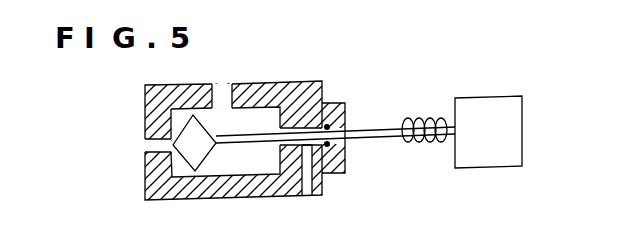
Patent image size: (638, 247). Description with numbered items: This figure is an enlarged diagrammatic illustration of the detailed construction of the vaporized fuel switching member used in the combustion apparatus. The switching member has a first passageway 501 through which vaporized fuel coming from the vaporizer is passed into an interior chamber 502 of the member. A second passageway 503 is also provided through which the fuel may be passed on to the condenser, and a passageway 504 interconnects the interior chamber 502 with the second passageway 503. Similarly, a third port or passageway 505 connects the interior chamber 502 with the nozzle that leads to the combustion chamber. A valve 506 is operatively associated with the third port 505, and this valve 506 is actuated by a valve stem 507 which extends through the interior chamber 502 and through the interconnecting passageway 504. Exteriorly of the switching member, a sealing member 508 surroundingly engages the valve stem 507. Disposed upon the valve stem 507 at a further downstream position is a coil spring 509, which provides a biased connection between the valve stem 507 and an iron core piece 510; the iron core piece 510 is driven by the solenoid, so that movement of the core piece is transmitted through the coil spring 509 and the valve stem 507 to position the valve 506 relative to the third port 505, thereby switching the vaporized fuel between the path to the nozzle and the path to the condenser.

The first passageway 501 is at (222, 96).
The interior chamber 502 is at (218, 162).
The second passageway 503 is at (307, 188).
The passageway 504 is at (287, 146).
The third port 505 is at (158, 148).
The valve 506 is at (188, 132).
The valve stem 507 is at (376, 130).
The sealing member 508 is at (329, 145).
The coil spring 509 is at (422, 119).
The iron core piece 510 is at (465, 152).